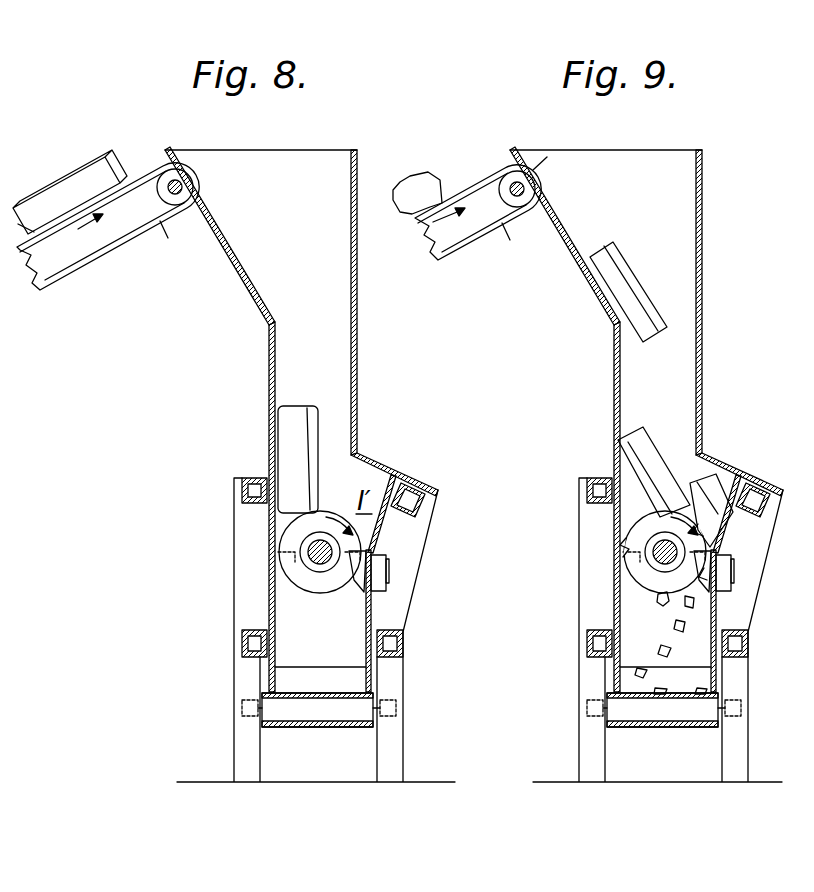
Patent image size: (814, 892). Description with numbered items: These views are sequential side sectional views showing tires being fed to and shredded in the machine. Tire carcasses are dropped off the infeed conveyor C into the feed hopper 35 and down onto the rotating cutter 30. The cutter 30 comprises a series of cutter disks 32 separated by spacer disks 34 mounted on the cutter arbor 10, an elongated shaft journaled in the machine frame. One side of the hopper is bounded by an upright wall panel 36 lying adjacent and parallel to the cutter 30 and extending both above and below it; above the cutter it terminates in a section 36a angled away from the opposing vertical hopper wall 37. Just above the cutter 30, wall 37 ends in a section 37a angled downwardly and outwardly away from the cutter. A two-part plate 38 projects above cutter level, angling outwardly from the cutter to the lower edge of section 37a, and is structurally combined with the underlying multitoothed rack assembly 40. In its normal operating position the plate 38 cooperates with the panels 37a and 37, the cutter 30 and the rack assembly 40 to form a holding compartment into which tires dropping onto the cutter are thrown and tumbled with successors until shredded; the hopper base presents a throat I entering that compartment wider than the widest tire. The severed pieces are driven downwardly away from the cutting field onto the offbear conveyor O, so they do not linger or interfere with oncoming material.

In FIG. 8, the cutter arbor 10 is at (312, 560).
In FIG. 9, the cutter arbor 10 is at (610, 566).
In FIG. 8, the cutter 30 is at (332, 503).
In FIG. 9, the cutter 30 is at (614, 514).
In FIG. 8, the cutter disks 32 is at (305, 586).
In FIG. 9, the cutter disks 32 is at (663, 571).
In FIG. 8, the spacer disks 34 is at (310, 545).
In FIG. 9, the spacer disks 34 is at (604, 554).
In FIG. 8, the feed hopper 35 is at (300, 183).
In FIG. 9, the feed hopper 35 is at (606, 148).
In FIG. 8, the upright wall panel 36 is at (268, 362).
In FIG. 9, the upright wall panel 36 is at (583, 507).
In FIG. 8, the angled section 36a is at (238, 273).
In FIG. 9, the angled section 36a is at (565, 238).
In FIG. 8, the vertical hopper wall 37 is at (357, 330).
In FIG. 9, the vertical hopper wall 37 is at (731, 302).
In FIG. 8, the angled section 37a is at (396, 470).
In FIG. 9, the angled section 37a is at (745, 561).
In FIG. 8, the two-part plate 38 is at (392, 529).
In FIG. 9, the two-part plate 38 is at (765, 561).
In FIG. 8, the multitoothed rack assembly 40 is at (352, 587).
In FIG. 9, the multitoothed rack assembly 40 is at (753, 593).
In FIG. 8, the infeed conveyor C is at (96, 258).
In FIG. 9, the infeed conveyor C is at (470, 220).
In FIG. 8, the throat I is at (318, 378).
In FIG. 9, the throat I is at (661, 394).
In FIG. 8, the offbear conveyor O is at (300, 693).
In FIG. 9, the offbear conveyor O is at (633, 696).